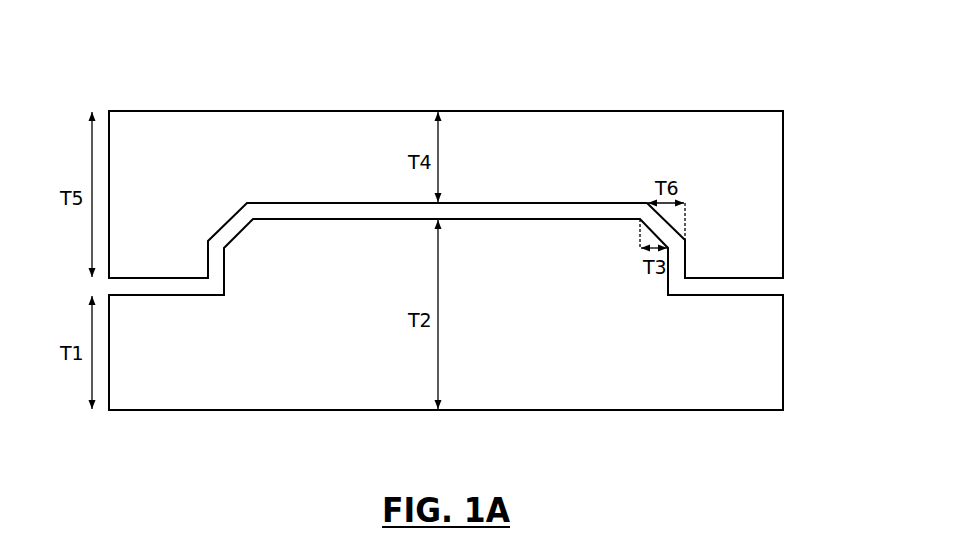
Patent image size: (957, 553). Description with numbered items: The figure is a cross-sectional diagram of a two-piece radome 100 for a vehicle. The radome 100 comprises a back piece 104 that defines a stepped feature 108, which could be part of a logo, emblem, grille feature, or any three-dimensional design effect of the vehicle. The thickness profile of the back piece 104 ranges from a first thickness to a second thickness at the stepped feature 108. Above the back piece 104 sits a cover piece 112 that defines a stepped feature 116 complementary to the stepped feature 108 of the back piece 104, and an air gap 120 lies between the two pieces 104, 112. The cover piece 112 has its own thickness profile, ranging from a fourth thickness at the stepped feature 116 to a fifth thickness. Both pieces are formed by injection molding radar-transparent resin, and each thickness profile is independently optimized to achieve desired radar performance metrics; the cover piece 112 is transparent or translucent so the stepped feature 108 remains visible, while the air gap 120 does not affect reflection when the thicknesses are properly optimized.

The two-piece radome 100 is at (164, 44).
The back piece 104 is at (783, 363).
The stepped feature 108 is at (250, 256).
The cover piece 112 is at (783, 190).
The stepped feature 116 is at (209, 211).
The air gap 120 is at (776, 287).